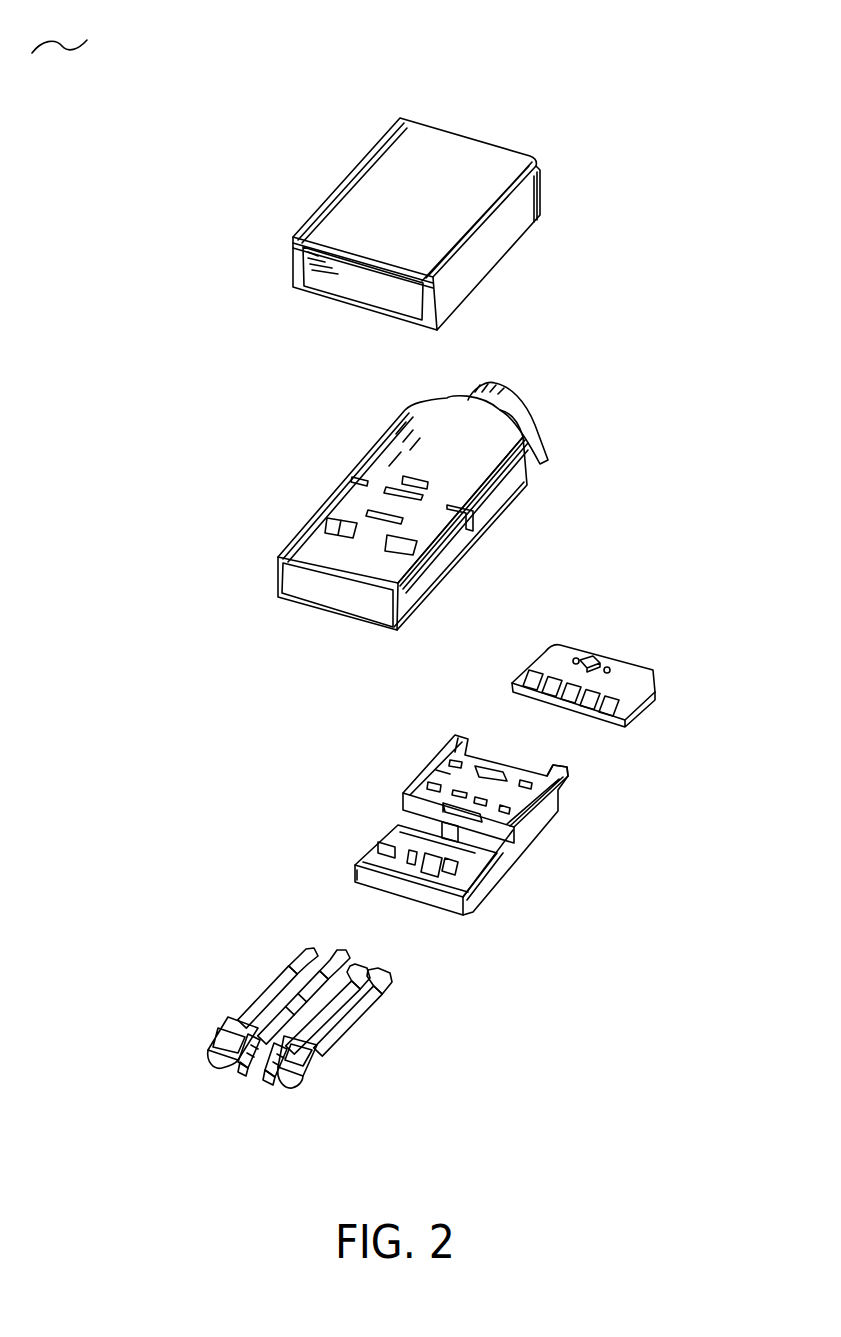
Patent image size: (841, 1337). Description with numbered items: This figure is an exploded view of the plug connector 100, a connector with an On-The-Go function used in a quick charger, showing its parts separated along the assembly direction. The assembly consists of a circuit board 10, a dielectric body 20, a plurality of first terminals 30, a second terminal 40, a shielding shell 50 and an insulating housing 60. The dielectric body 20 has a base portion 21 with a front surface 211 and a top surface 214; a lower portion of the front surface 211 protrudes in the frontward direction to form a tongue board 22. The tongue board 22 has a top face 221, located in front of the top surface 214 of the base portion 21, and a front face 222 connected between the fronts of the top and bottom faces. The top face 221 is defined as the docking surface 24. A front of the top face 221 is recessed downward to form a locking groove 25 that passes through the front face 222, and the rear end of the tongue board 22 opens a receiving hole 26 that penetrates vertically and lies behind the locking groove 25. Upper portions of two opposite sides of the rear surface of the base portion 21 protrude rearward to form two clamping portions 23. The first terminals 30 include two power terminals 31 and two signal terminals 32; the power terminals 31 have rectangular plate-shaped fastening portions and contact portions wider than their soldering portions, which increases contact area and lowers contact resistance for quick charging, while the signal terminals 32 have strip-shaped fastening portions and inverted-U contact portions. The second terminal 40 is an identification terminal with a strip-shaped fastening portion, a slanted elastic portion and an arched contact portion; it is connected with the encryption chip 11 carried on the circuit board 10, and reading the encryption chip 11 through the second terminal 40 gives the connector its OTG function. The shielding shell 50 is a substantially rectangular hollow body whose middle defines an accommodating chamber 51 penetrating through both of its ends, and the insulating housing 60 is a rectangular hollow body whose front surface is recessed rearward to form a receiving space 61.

The plug connector 100 is at (59, 31).
The circuit board 10 is at (609, 655).
The encryption chip 11 is at (593, 653).
The dielectric body 20 is at (464, 849).
The base portion 21 is at (475, 794).
The front surface 211 is at (418, 802).
The top surface 214 is at (443, 773).
The tongue board 22 is at (410, 894).
The top face 221 is at (382, 847).
The front face 222 is at (390, 887).
The clamping portions 23 is at (568, 776).
The docking surface 24 is at (503, 862).
The locking groove 25 is at (450, 877).
The receiving hole 26 is at (452, 830).
The first terminals 30 is at (294, 1010).
The power terminals 31 is at (212, 1050).
The signal terminals 32 is at (242, 1060).
The second terminal 40 is at (337, 953).
The shielding shell 50 is at (413, 531).
The accommodating chamber 51 is at (337, 597).
The insulating housing 60 is at (425, 246).
The receiving space 61 is at (352, 287).